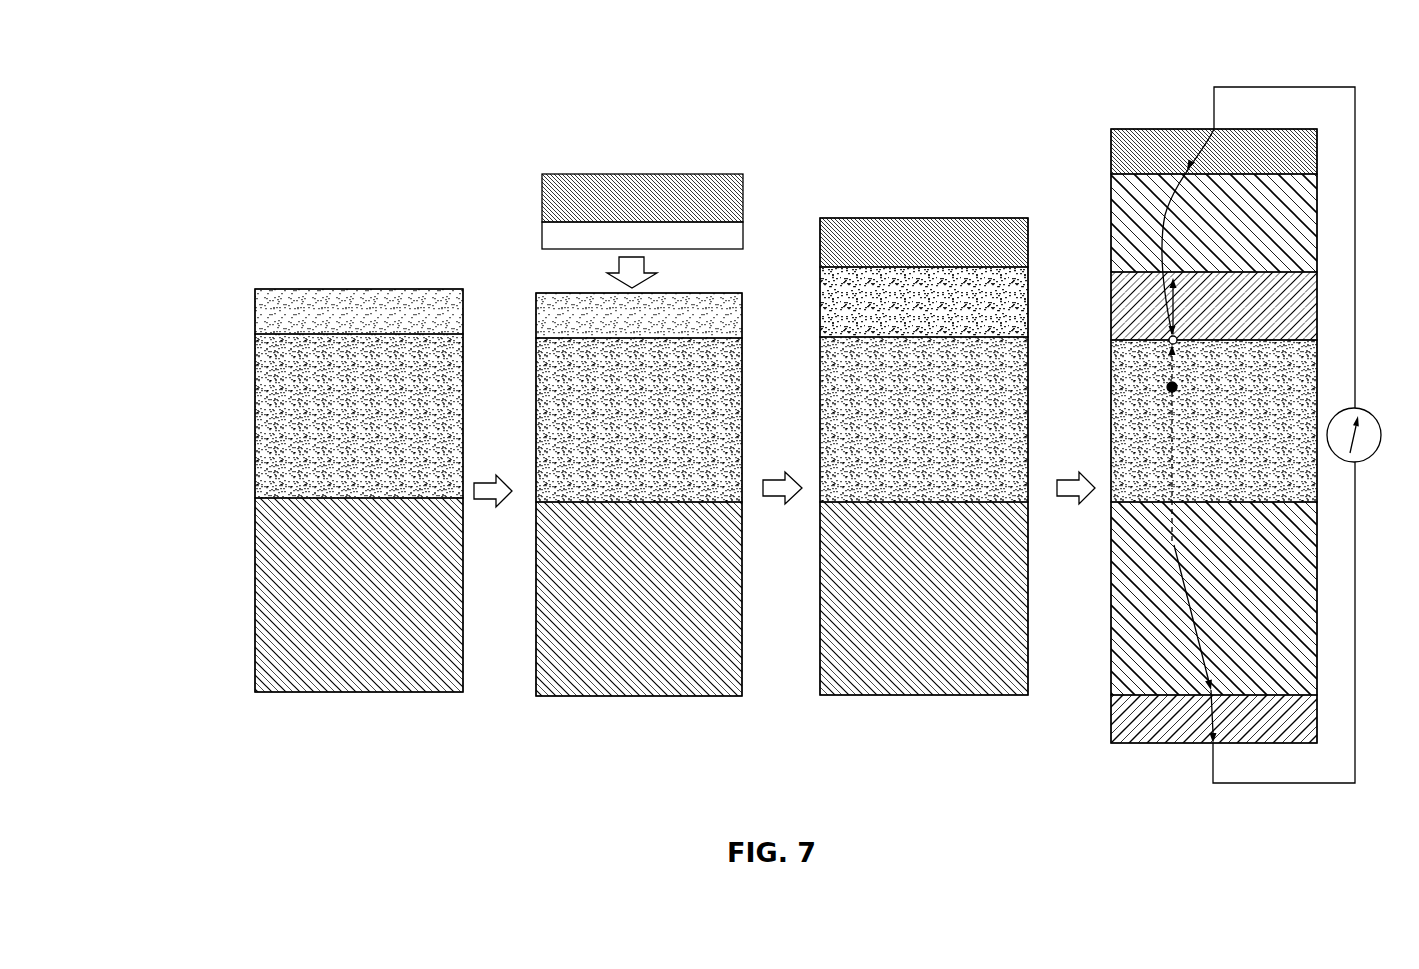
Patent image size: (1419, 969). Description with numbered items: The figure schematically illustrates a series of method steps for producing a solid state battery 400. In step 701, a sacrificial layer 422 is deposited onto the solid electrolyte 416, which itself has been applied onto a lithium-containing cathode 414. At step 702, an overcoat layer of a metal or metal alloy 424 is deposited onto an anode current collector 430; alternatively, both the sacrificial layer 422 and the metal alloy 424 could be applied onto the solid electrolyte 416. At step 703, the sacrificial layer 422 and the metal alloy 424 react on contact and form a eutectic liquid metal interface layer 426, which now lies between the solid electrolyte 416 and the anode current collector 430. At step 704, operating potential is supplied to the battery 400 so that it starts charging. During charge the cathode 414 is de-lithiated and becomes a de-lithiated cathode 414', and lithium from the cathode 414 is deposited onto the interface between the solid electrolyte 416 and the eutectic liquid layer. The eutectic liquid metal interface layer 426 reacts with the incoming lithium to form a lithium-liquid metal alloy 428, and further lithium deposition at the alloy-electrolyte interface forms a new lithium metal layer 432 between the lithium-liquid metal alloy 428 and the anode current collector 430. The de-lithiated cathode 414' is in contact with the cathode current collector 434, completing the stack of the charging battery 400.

The battery 400 is at (1111, 70).
The lithium-containing cathode 414 is at (605, 597).
The de-lithiated cathode 414' is at (1177, 598).
The solid electrolyte 416 is at (262, 411).
The sacrificial layer 422 is at (262, 312).
The metal or metal alloy 424 is at (550, 235).
The eutectic liquid metal interface layer 426 is at (830, 308).
The lithium-liquid metal alloy 428 is at (1118, 306).
The anode current collector 430 is at (550, 198).
The lithium metal layer 432 is at (1118, 198).
The cathode current collector 434 is at (1118, 718).
The step 701 is at (350, 711).
The step 702 is at (628, 713).
The step 703 is at (898, 722).
The step 704 is at (1157, 761).